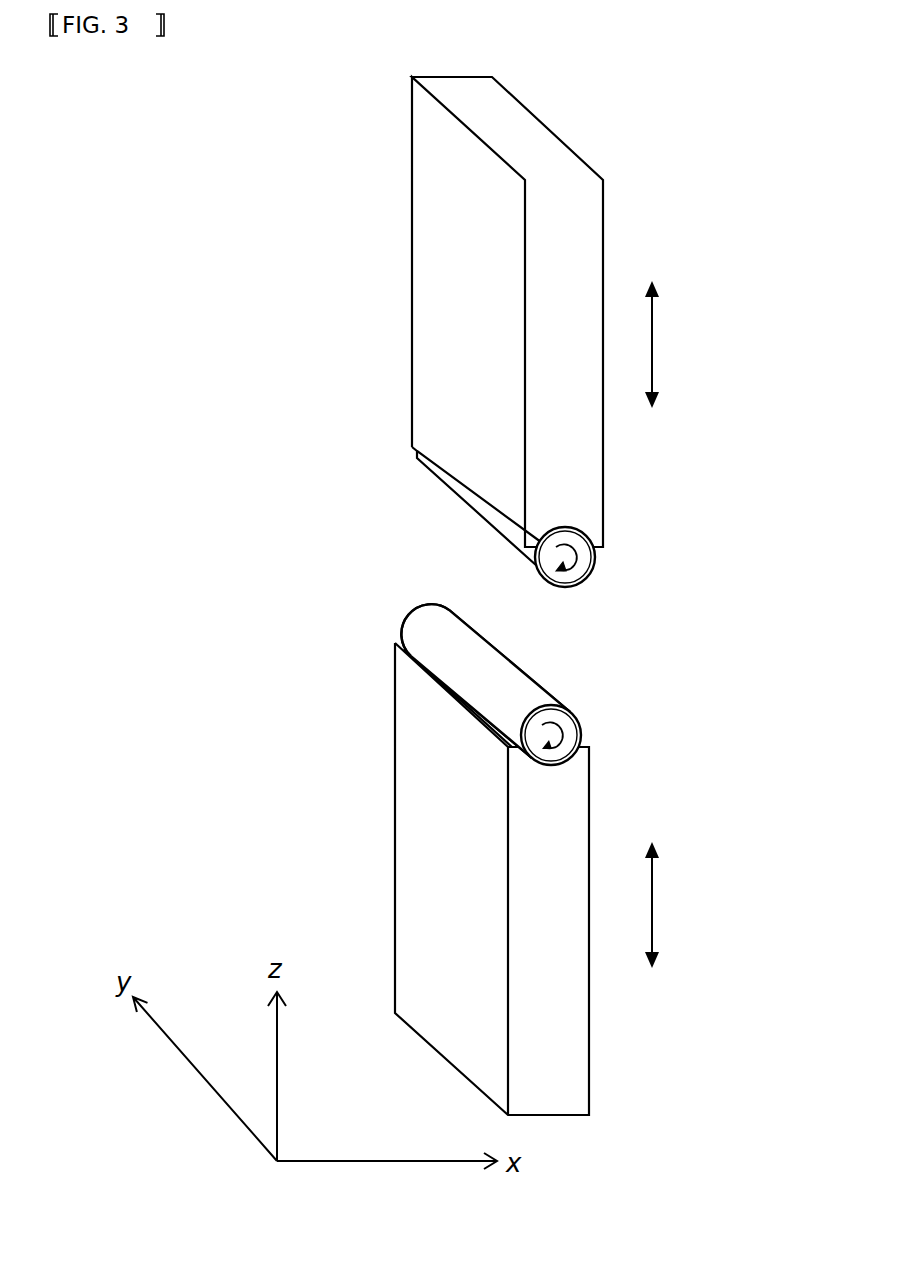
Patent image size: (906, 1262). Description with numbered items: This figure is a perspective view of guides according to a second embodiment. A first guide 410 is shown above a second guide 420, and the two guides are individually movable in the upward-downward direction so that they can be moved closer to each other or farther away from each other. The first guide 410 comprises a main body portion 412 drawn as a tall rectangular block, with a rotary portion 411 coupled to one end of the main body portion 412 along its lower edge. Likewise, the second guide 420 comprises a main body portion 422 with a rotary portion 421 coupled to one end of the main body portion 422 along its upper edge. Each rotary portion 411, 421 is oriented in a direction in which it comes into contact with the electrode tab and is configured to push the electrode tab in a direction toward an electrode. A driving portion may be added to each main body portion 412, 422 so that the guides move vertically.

The first guide 410 is at (525, 332).
The rotary portion 411 is at (448, 502).
The main body portion 412 is at (433, 325).
The second guide 420 is at (531, 859).
The rotary portion 421 is at (541, 699).
The main body portion 422 is at (433, 868).